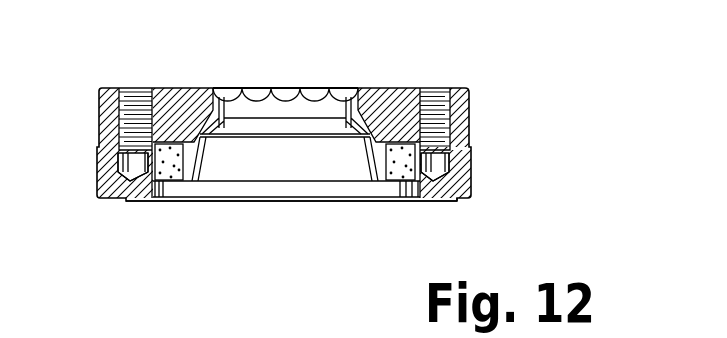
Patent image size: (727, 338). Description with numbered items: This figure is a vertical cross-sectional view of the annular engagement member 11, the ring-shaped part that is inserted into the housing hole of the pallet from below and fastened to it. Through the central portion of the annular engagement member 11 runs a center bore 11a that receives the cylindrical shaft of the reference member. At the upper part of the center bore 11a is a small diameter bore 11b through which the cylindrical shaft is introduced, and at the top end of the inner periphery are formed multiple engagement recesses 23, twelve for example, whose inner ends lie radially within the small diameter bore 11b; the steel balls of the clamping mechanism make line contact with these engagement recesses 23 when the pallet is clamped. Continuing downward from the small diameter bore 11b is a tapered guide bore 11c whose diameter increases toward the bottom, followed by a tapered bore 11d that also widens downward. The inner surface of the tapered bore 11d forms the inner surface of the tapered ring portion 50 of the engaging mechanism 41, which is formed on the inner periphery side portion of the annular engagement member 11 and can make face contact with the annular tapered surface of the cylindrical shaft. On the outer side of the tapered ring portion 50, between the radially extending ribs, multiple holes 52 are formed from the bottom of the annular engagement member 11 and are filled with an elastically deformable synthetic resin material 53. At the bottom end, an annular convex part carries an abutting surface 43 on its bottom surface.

The annular engagement member 11 is at (322, 157).
The center bore 11a is at (298, 167).
The small diameter bore 11b is at (243, 113).
The tapered guide bore 11c is at (218, 147).
The tapered bore 11d is at (178, 202).
The engagement recesses 23 is at (362, 88).
The engaging mechanism 41 is at (367, 180).
The abutting surface 43 is at (428, 200).
The tapered ring portion 50 is at (398, 182).
The holes 52 is at (455, 134).
The synthetic resin material 53 is at (450, 176).